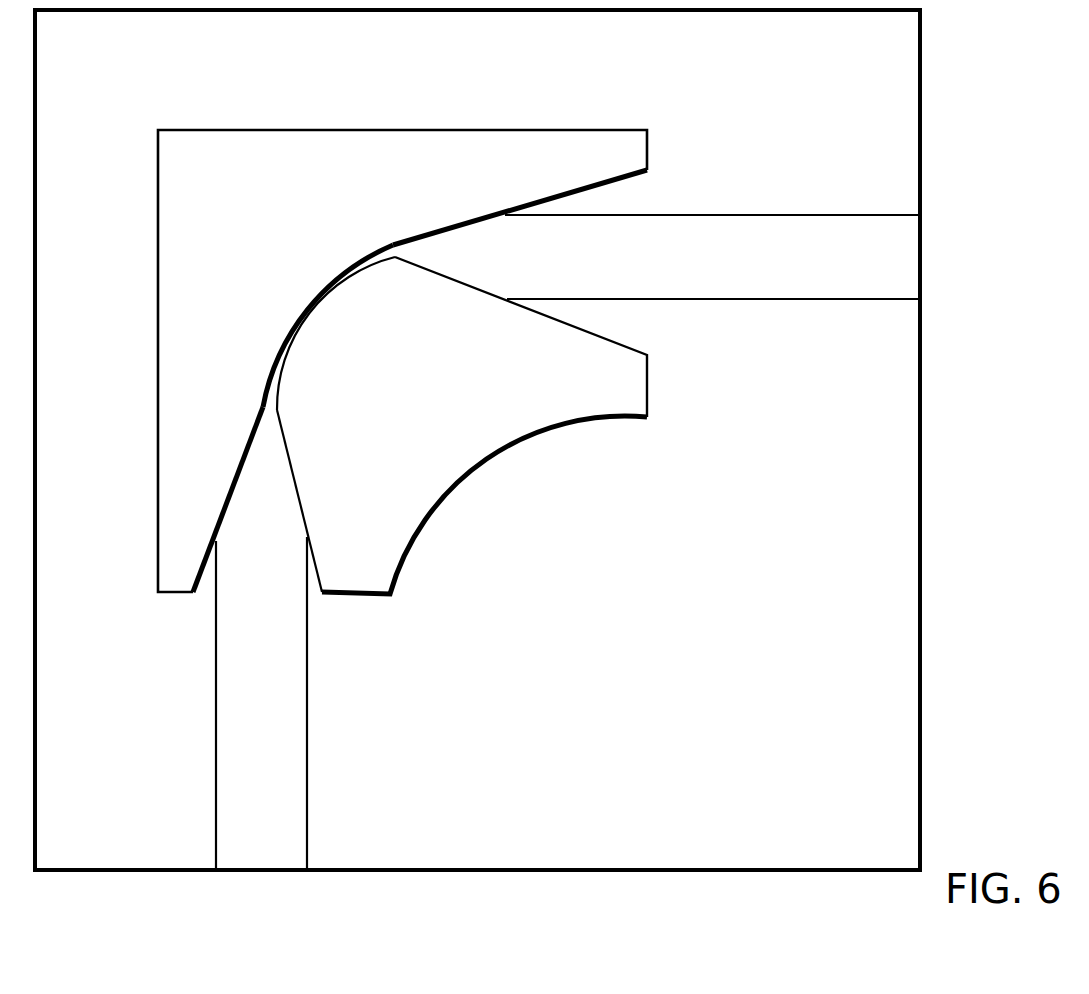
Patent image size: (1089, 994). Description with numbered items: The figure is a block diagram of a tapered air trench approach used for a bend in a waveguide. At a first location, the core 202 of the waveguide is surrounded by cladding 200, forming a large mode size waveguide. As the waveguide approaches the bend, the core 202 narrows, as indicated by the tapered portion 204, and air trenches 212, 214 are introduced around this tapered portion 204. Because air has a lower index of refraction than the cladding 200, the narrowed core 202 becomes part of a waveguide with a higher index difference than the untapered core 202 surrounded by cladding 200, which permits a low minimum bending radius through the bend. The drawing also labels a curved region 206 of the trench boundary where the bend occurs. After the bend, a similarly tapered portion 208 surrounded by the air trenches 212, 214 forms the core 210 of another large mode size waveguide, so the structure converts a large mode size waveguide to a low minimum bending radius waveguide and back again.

The cladding 200 is at (759, 118).
The core 202 is at (793, 273).
The tapered portion 204 is at (483, 265).
The curved wall segment of air trench 206 is at (278, 372).
The tapered portion 208 is at (288, 495).
The core 210 is at (284, 692).
The air trench 212 is at (476, 130).
The air trench 214 is at (613, 425).